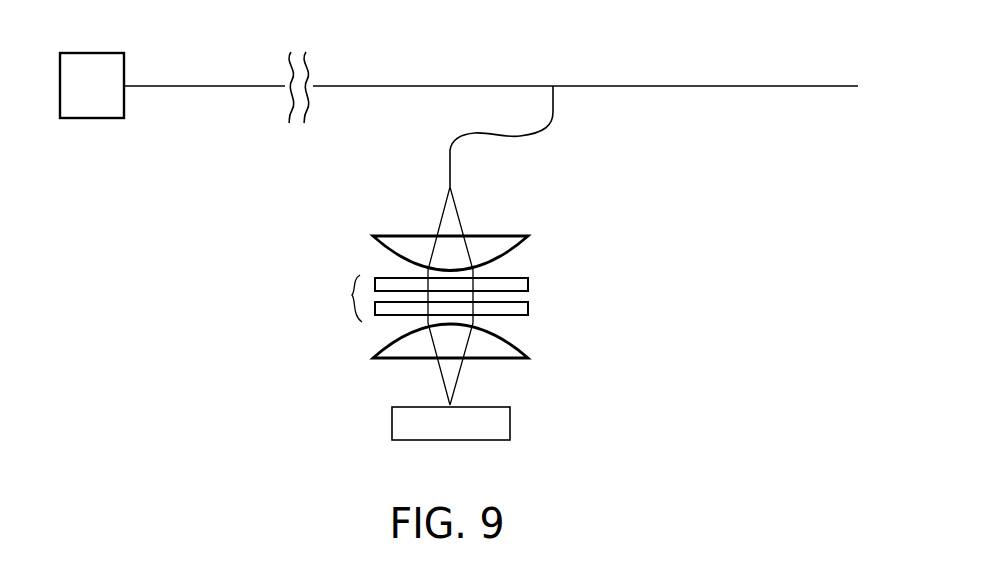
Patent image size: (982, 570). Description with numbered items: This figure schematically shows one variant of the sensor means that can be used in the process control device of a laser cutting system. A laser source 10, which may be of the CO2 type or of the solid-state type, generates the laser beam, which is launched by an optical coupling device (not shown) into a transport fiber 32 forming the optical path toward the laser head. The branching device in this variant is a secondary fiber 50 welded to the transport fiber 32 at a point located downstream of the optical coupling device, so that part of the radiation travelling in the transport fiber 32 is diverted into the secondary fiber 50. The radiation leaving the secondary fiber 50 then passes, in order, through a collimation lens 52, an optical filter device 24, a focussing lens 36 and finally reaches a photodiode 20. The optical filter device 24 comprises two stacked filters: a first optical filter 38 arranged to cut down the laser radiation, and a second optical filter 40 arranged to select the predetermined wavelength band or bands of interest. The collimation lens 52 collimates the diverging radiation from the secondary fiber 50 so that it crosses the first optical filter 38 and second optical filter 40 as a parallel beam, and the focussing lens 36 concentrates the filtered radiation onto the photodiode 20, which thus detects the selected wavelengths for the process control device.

The laser source 10 is at (102, 118).
The transport fiber 32 is at (405, 86).
The secondary fiber 50 is at (537, 133).
The collimation lens 52 is at (525, 252).
The first optical filter 38 is at (528, 287).
The second optical filter 40 is at (528, 308).
The optical filter device 24 is at (352, 295).
The focussing lens 36 is at (520, 342).
The photodiode 20 is at (510, 423).